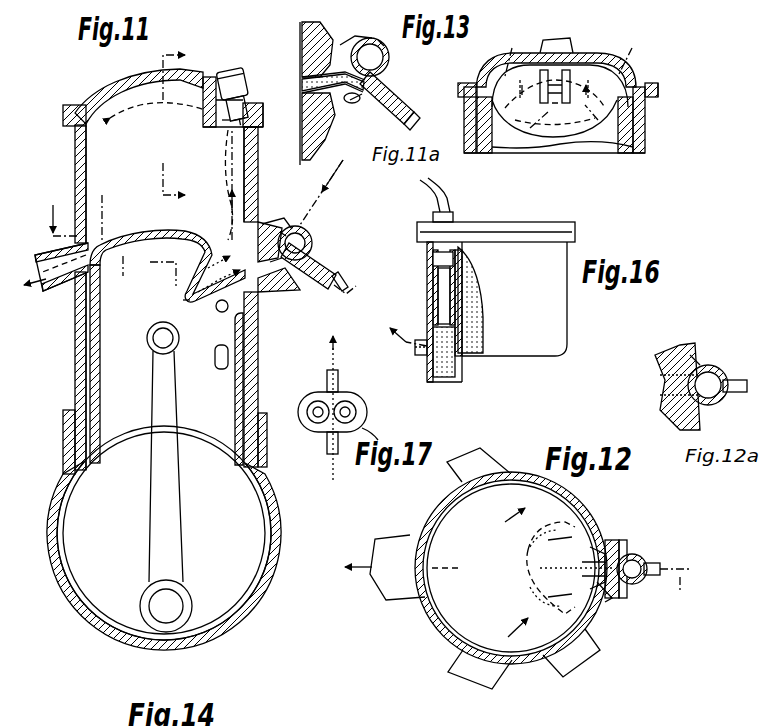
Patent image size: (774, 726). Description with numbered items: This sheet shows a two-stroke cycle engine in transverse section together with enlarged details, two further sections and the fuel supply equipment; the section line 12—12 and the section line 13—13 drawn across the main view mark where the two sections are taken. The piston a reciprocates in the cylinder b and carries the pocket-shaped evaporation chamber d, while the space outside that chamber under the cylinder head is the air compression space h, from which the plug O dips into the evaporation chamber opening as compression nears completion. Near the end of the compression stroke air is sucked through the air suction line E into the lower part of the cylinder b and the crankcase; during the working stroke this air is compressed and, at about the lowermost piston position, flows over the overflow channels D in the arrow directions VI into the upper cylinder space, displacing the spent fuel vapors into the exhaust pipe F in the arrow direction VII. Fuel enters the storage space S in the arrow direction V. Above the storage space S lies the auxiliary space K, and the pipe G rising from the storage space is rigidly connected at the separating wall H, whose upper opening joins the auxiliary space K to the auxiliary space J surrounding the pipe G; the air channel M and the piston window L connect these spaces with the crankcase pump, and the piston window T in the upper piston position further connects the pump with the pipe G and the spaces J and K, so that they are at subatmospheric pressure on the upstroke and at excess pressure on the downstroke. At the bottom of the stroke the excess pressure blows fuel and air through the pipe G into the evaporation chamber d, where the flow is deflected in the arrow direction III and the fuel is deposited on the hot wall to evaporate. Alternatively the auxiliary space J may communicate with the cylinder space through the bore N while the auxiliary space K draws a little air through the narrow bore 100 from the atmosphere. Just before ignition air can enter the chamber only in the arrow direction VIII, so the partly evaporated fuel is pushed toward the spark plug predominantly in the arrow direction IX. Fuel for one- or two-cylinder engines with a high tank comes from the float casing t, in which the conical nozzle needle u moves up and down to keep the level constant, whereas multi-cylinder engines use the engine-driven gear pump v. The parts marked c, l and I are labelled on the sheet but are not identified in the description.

In FIG. 11, the piston a is at (88, 298).
In FIG. 13, the piston a is at (486, 145).
In FIG. 12, the piston a is at (440, 520).
In FIG. 11, the cylinder b is at (76, 326).
In FIG. 13, the cylinder b is at (468, 116).
In FIG. 12, the cylinder b is at (437, 616).
In FIG. 11, the cylinder head flange c is at (264, 106).
In FIG. 11A, the cylinder head flange c is at (313, 93).
In FIG. 13, the cylinder head flange c is at (660, 88).
In FIG. 11, the evaporation chamber d is at (178, 298).
In FIG. 13, the evaporation chamber d is at (584, 140).
In FIG. 12, the evaporation chamber d is at (520, 550).
In FIG. 11, the air compression space h is at (169, 90).
In FIG. 13, the air compression space h is at (482, 74).
In FIG. 11, the spark plug l is at (250, 72).
In FIG. 13, the spark plug l is at (565, 37).
In FIG. 11, the plug O is at (203, 120).
In FIG. 13, the plug O is at (520, 114).
In FIG. 11, the overflow channels D is at (124, 262).
In FIG. 12, the overflow channels D is at (490, 460).
In FIG. 12, the air suction line E is at (590, 650).
In FIG. 11, the exhaust pipe F is at (48, 280).
In FIG. 12, the exhaust pipe F is at (388, 592).
In FIG. 11, the bore N is at (265, 232).
In FIG. 11A, the bore N is at (332, 22).
In FIG. 11, the separating wall H is at (287, 222).
In FIG. 11A, the separating wall H is at (360, 34).
In FIG. 12, the separating wall H is at (622, 542).
In FIG. 12A, the separating wall H is at (720, 366).
In FIG. 11, the auxiliary space K is at (296, 226).
In FIG. 11A, the auxiliary space K is at (386, 62).
In FIG. 12, the auxiliary space K is at (640, 584).
In FIG. 12A, the auxiliary space K is at (715, 402).
In FIG. 11, the storage space S is at (306, 242).
In FIG. 11A, the storage space S is at (384, 73).
In FIG. 12, the storage space S is at (641, 562).
In FIG. 11, the auxiliary space J is at (312, 272).
In FIG. 11A, the auxiliary space J is at (352, 118).
In FIG. 12, the auxiliary space J is at (617, 592).
In FIG. 11, the pipe G is at (282, 275).
In FIG. 11A, the pipe G is at (356, 108).
In FIG. 12, the pipe G is at (592, 588).
In FIG. 12A, the pipe G is at (680, 410).
In FIG. 11, the air channel M is at (217, 310).
In FIG. 11A, the air channel M is at (358, 104).
In FIG. 12, the air channel M is at (600, 550).
In FIG. 12A, the air channel M is at (682, 348).
In FIG. 11, the narrow bore 100 is at (283, 230).
In FIG. 11A, the narrow bore 100 is at (385, 48).
In FIG. 11, the piston window L is at (214, 358).
In FIG. 11, the piston window T is at (243, 410).
In FIG. 16, the conical nozzle needle u is at (433, 296).
In FIG. 16, the float casing t is at (560, 320).
In FIG. 17, the pump v is at (312, 400).
In FIG. 11, the section line 12— 12 is at (181, 198).
In FIG. 11, the section line 13— 13 is at (187, 124).
In FIG. 11, the axis line I is at (347, 281).
In FIG. 17, the axis line I is at (330, 348).
In FIG. 12, the axis line I is at (675, 586).
In FIG. 11, the arrow direction III is at (185, 272).
In FIG. 12, the arrow direction III is at (560, 567).
In FIG. 16, the arrow direction V is at (407, 346).
In FIG. 11, the arrow directions VI is at (231, 172).
In FIG. 12, the arrow directions VI is at (507, 572).
In FIG. 11, the arrow direction VII is at (104, 214).
In FIG. 12, the arrow direction VII is at (364, 570).
In FIG. 13, the arrow direction VIII is at (574, 53).
In FIG. 13, the arrow direction IX is at (566, 127).